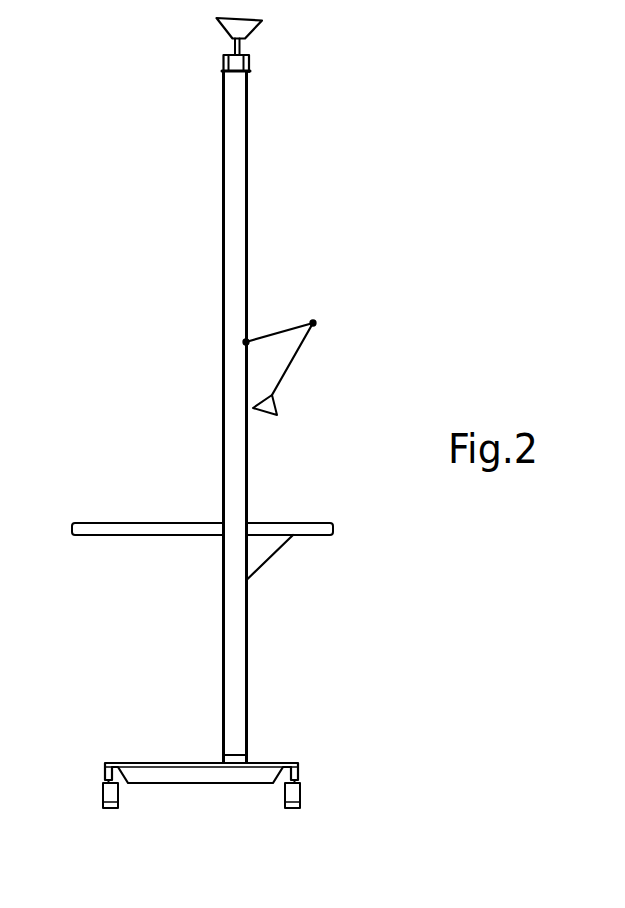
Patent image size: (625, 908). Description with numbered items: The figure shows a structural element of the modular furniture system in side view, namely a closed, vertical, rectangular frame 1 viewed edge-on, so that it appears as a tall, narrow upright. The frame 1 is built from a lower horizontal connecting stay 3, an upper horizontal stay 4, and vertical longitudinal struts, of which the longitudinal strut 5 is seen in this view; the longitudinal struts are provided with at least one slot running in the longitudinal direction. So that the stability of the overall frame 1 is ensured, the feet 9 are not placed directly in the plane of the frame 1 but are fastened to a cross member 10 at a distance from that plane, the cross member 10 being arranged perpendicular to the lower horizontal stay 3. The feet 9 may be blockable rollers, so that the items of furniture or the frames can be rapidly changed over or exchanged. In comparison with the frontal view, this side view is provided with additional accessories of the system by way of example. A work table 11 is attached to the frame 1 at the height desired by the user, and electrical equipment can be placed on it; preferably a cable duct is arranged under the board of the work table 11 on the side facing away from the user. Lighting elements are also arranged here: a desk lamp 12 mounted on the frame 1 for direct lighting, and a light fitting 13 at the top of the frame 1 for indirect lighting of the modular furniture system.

The frame 1 is at (182, 220).
The lower horizontal connecting stay 3 is at (250, 762).
The upper horizontal stay 4 is at (251, 72).
The vertical longitudinal strut 5 is at (248, 218).
The feet 9 is at (103, 793).
The cross member 10 is at (168, 772).
The work table 11 is at (302, 530).
The desk lamp 12 is at (298, 350).
The light fitting 13 is at (248, 27).